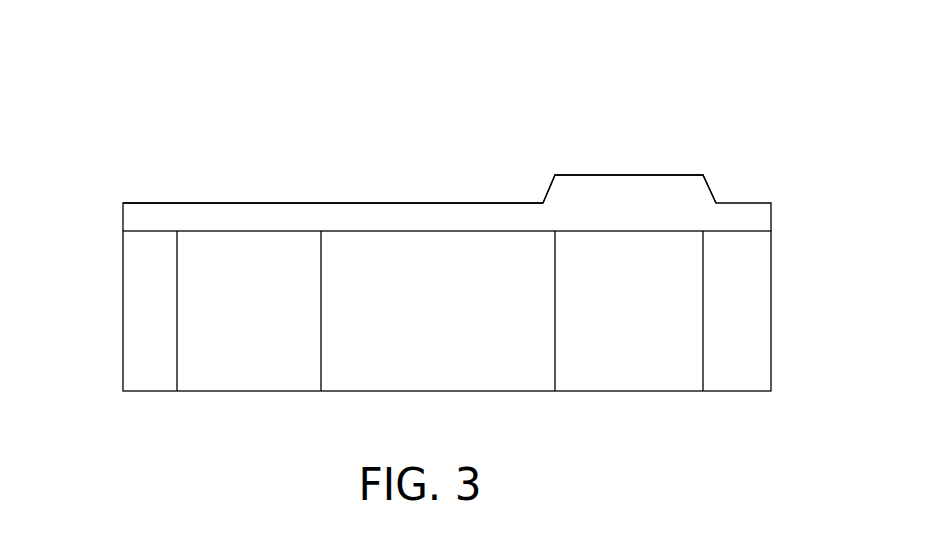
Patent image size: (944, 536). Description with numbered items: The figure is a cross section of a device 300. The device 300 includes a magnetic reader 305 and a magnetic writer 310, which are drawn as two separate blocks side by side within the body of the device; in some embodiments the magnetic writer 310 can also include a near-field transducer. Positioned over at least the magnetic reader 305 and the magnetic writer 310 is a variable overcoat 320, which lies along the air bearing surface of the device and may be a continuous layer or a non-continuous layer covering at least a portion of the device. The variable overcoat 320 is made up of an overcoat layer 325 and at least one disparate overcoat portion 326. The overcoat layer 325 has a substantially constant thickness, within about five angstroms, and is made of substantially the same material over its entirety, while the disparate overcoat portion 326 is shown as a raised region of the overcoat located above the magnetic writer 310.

The device 300 is at (97, 312).
The magnetic reader 305 is at (234, 322).
The magnetic writer 310 is at (613, 334).
The variable overcoat 320 is at (797, 217).
The overcoat layer 325 is at (276, 229).
The disparate overcoat portion 326 is at (613, 207).